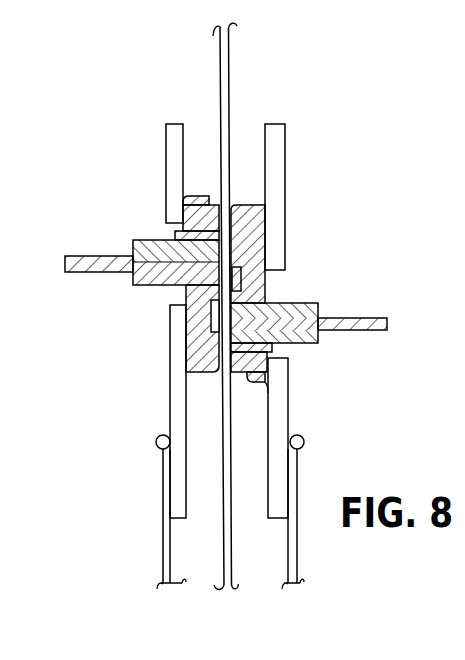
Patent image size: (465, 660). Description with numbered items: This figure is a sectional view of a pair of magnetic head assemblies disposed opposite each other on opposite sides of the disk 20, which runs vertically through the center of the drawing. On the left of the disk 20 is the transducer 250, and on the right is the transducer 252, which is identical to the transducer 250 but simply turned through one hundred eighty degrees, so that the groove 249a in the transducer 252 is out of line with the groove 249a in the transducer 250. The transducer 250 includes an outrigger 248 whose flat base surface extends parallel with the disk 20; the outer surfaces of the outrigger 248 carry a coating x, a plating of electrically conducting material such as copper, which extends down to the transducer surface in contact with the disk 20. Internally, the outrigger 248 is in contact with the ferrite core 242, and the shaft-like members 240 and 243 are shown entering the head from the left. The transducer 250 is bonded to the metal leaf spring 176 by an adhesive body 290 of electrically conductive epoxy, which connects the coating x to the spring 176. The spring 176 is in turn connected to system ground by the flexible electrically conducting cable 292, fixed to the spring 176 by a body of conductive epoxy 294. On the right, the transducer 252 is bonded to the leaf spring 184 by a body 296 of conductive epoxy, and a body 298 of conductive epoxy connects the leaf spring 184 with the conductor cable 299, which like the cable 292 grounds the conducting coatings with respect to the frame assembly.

The disk 20 is at (229, 70).
The leaf spring 176 is at (172, 142).
The adhesive body 290 is at (185, 200).
The outrigger 248 is at (190, 210).
The coating x is at (176, 233).
The stub shaft 240 is at (66, 265).
The ferrite core 242 is at (133, 249).
The shoulder 243 is at (135, 275).
The transducer 250 is at (186, 290).
The groove 249a is at (213, 320).
The transducer 252 is at (262, 292).
The body of conductive epoxy 296 is at (262, 378).
The leaf spring 184 is at (287, 408).
The body of conductive epoxy 294 is at (160, 442).
The body of conductive epoxy 298 is at (297, 437).
The flexible electrically conducting cable 292 is at (168, 530).
The conductor cable 299 is at (298, 549).